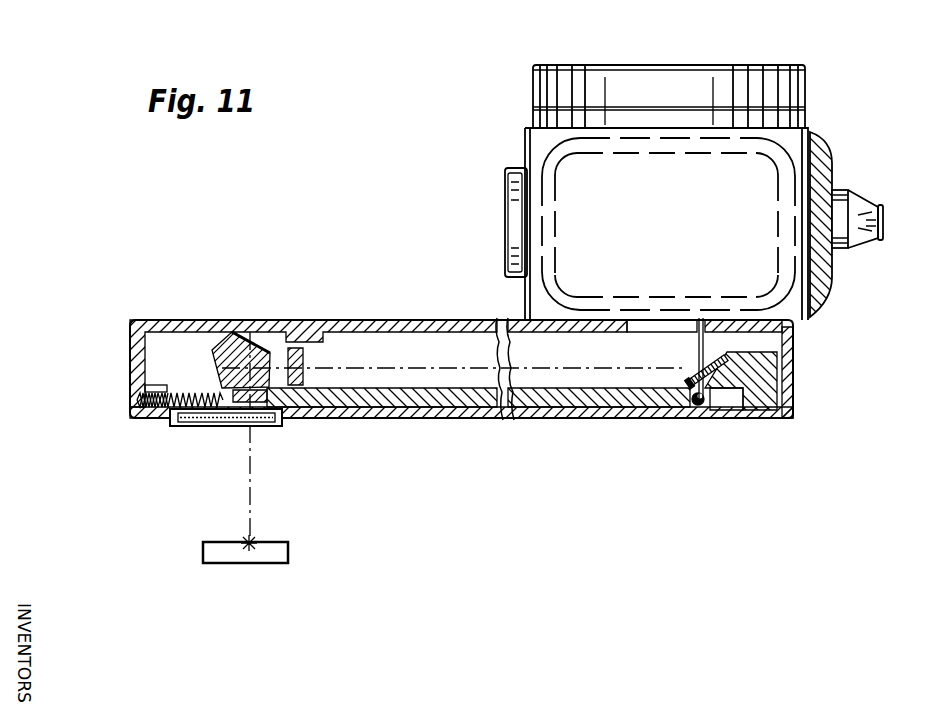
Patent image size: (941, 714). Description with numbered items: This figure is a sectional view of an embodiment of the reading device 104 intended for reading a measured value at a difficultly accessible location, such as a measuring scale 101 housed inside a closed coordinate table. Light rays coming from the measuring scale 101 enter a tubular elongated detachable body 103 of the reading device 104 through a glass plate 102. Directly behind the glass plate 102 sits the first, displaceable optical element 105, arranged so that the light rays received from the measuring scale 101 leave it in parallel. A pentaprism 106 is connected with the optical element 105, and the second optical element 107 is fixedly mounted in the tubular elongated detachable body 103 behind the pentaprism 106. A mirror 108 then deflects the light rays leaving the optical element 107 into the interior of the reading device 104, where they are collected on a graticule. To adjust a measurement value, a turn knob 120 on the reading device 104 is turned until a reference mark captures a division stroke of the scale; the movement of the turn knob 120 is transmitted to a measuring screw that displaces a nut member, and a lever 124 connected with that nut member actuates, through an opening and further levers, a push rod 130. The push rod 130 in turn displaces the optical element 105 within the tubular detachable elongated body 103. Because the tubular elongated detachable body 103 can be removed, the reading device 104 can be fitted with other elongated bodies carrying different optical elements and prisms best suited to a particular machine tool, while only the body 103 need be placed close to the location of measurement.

The measuring scale 101 is at (262, 548).
The glass plate 102 is at (188, 426).
The tubular elongated detachable body 103 is at (528, 412).
The reading device 104 is at (828, 141).
The first displaceable optical element 105 is at (278, 400).
The pentaprism 106 is at (231, 333).
The second optical element 107 is at (305, 360).
The mirror 108 is at (690, 382).
The turn knob 120 is at (858, 212).
The lever 124 is at (701, 342).
The push rod 130 is at (607, 408).